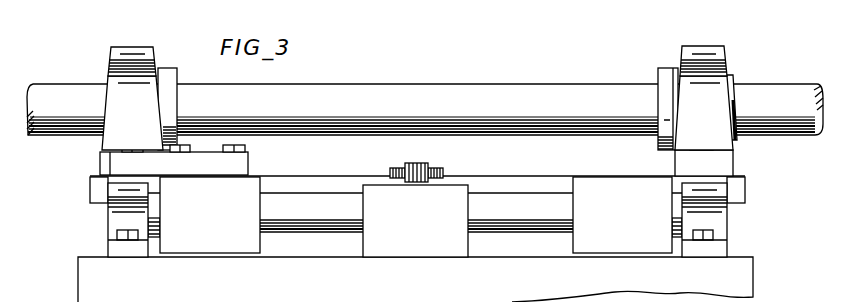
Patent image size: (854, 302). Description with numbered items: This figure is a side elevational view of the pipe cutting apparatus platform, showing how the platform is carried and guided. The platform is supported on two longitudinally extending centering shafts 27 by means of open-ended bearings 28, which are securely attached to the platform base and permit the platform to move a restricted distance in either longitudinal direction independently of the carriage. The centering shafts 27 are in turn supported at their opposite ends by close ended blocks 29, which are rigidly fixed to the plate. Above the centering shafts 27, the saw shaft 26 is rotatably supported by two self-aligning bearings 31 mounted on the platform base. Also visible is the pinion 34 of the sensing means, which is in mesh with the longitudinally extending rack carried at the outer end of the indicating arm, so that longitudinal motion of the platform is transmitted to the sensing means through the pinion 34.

The saw shaft 26 is at (391, 94).
The centering shafts 27 is at (533, 206).
The open-ended bearings 28 is at (217, 230).
The close ended blocks 29 is at (113, 220).
The self-aligning bearings 31 is at (137, 52).
The pinion 34 is at (436, 168).